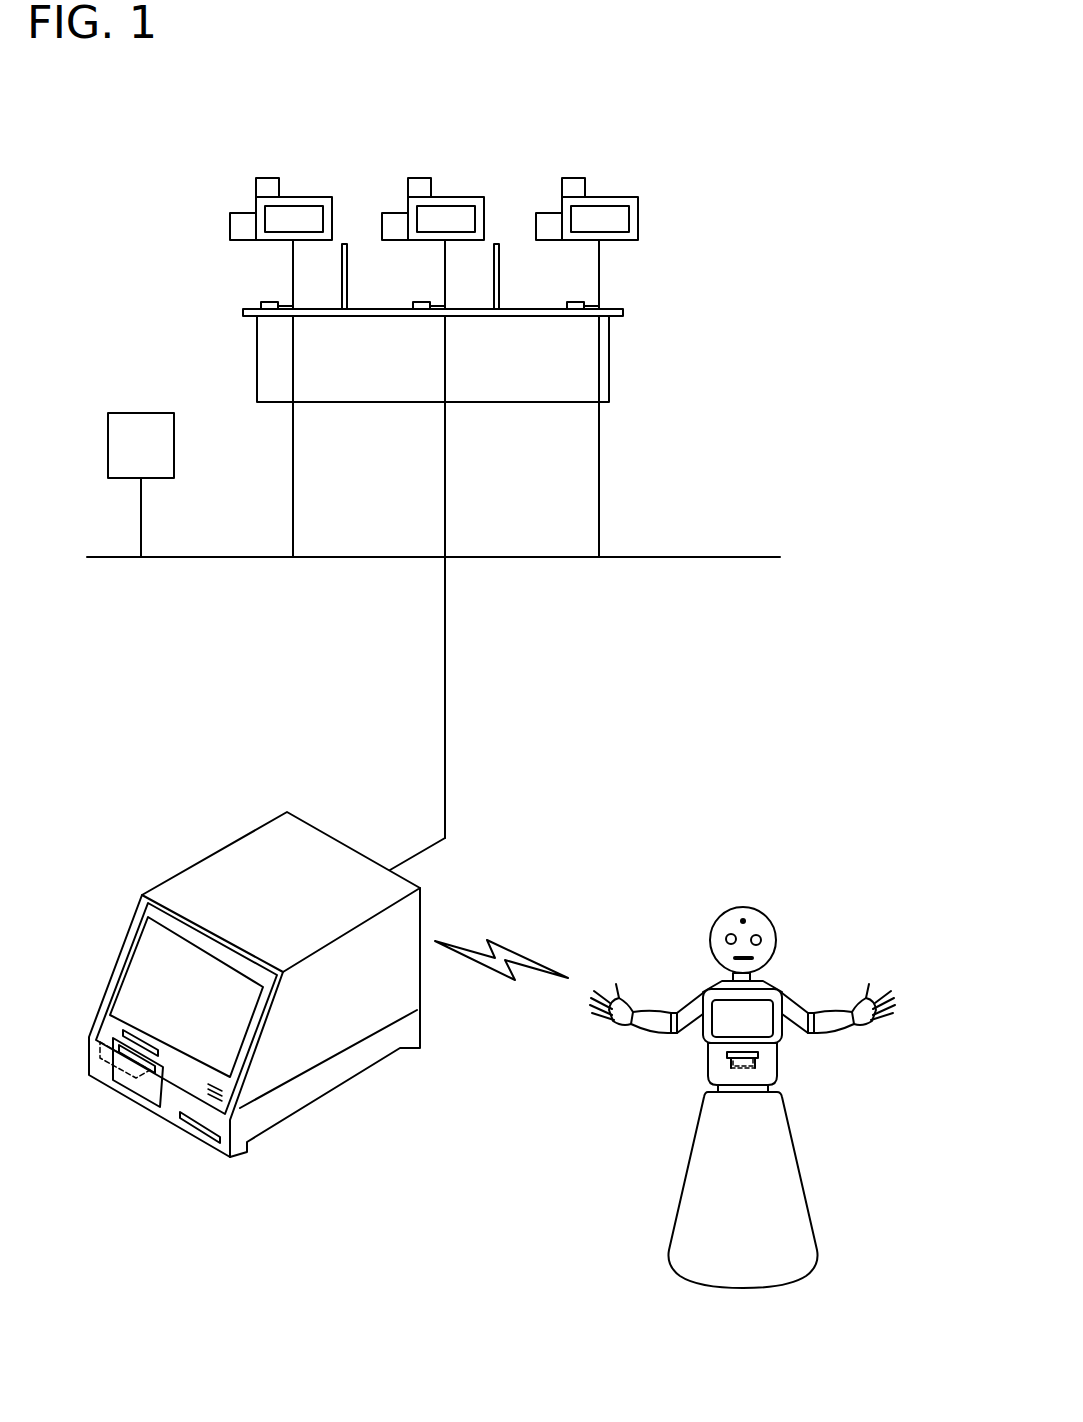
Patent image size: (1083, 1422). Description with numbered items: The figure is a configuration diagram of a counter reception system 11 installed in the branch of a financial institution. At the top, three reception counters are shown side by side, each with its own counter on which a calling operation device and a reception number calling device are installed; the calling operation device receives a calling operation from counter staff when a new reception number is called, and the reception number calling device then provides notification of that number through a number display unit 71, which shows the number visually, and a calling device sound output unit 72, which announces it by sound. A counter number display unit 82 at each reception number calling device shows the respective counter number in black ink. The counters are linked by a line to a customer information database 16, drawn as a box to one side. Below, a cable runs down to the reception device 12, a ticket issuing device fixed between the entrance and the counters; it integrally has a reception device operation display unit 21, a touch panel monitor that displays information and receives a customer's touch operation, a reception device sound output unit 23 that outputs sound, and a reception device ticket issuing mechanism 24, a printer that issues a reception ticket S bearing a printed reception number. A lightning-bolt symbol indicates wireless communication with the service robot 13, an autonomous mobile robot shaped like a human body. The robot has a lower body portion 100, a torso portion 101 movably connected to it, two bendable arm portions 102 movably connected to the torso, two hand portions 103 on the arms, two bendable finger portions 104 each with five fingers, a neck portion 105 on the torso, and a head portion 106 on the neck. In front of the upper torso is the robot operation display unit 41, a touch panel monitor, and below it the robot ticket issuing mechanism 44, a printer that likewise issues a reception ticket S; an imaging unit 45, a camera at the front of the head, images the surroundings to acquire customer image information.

The counter reception system 11 is at (715, 146).
The reception device 12 is at (205, 838).
The service robot 13 is at (785, 862).
The customer information database 16 is at (141, 412).
The reception device operation display unit 21 is at (142, 983).
The reception device sound output unit 23 is at (209, 1100).
The reception device ticket issuing mechanism 24 is at (146, 1090).
The robot operation display unit 41 is at (738, 1019).
The robot ticket issuing mechanism 44 is at (760, 1055).
The imaging unit 45 is at (743, 917).
The number display unit 71 is at (264, 209).
The calling device sound output unit 72 is at (267, 186).
The counter number display unit 82 is at (229, 222).
The lower body portion 100 is at (768, 1207).
The torso portion 101 is at (763, 1077).
The arm portion 102 is at (683, 1008).
The hand portion 103 is at (618, 1039).
The finger portion 104 is at (596, 986).
The neck portion 105 is at (753, 977).
The head portion 106 is at (712, 924).
The reception ticket S is at (102, 1076).